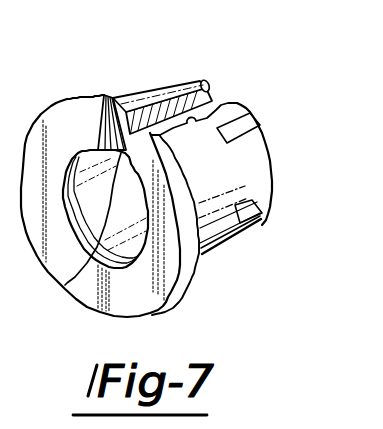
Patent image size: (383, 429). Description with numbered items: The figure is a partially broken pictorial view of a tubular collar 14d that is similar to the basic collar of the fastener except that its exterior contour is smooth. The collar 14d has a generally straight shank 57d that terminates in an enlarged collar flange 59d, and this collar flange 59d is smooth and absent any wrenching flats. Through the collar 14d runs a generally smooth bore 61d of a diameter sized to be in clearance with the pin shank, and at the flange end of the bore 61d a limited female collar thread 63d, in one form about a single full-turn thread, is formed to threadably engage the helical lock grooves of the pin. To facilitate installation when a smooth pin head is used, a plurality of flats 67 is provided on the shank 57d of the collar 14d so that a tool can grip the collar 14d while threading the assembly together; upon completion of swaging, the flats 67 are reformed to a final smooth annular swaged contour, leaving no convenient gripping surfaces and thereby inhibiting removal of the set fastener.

The collar 14d is at (184, 170).
The shank 57d is at (257, 165).
The collar flange 59d is at (189, 291).
The bore 61d is at (210, 82).
The collar thread 63d is at (65, 285).
The flats 67 is at (242, 123).